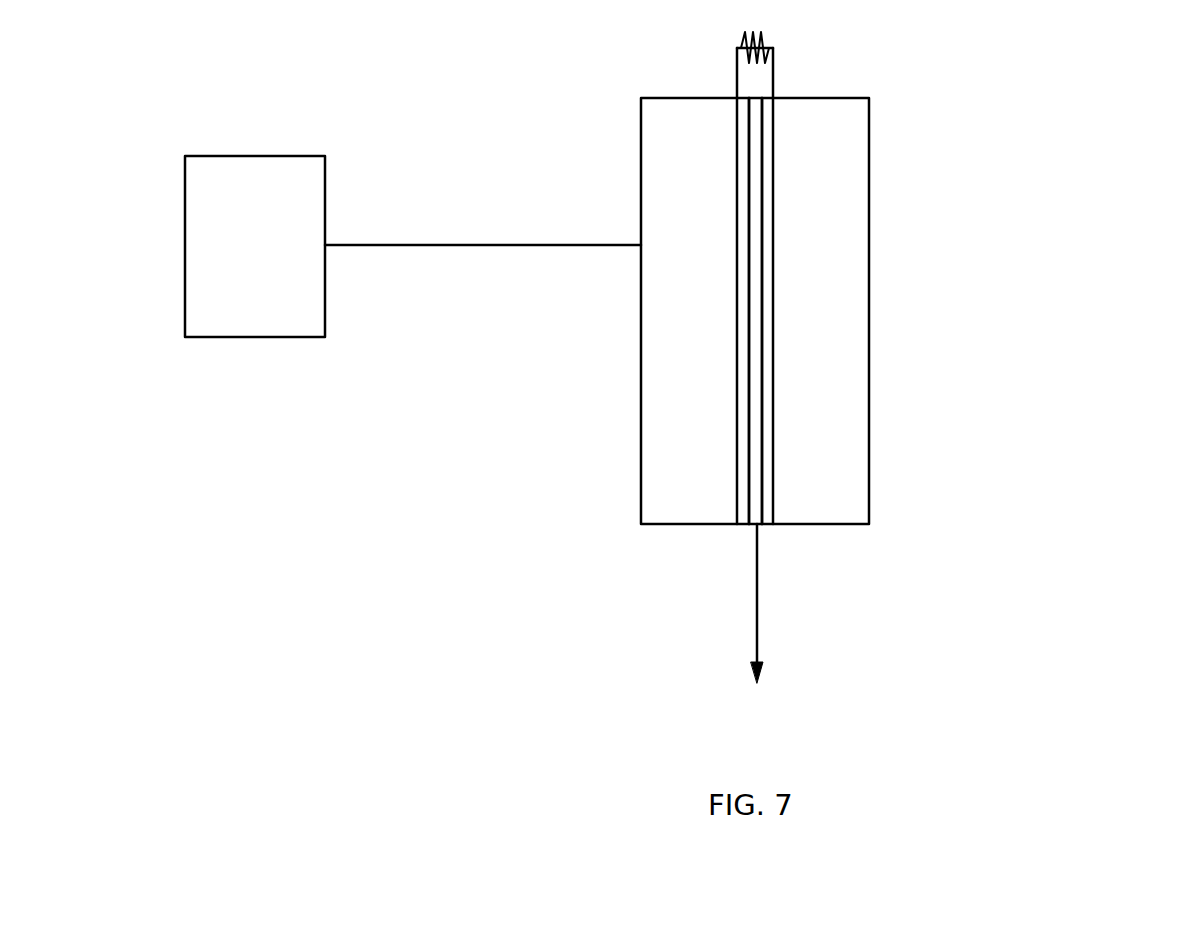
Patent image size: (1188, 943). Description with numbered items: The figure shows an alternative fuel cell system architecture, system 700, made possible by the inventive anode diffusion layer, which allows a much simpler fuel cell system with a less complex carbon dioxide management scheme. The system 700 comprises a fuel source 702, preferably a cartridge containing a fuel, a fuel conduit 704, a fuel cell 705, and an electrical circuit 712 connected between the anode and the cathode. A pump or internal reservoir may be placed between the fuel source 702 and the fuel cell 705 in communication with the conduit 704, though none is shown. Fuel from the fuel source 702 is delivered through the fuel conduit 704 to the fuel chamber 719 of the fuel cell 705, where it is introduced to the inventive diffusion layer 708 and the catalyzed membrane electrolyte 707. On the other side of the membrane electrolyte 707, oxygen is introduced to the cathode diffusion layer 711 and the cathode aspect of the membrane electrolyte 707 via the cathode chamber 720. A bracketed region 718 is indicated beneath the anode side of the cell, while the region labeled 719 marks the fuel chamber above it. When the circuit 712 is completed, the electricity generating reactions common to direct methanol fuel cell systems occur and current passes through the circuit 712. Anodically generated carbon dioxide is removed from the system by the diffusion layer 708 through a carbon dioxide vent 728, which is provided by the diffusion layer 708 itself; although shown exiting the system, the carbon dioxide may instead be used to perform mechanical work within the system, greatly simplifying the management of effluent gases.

The system 700 is at (1163, 576).
The fuel source 702 is at (278, 261).
The fuel conduit 704 is at (437, 245).
The fuel cell 705 is at (869, 210).
The catalyzed membrane electrolyte 707 is at (757, 438).
The diffusion layer 708 is at (743, 494).
The cathode diffusion layer 711 is at (772, 493).
The circuit 712 is at (761, 46).
The anode compartment 718 is at (750, 535).
The fuel chamber 719 is at (736, 93).
The cathode chamber 720 is at (871, 535).
The carbon dioxide vent 728 is at (757, 636).